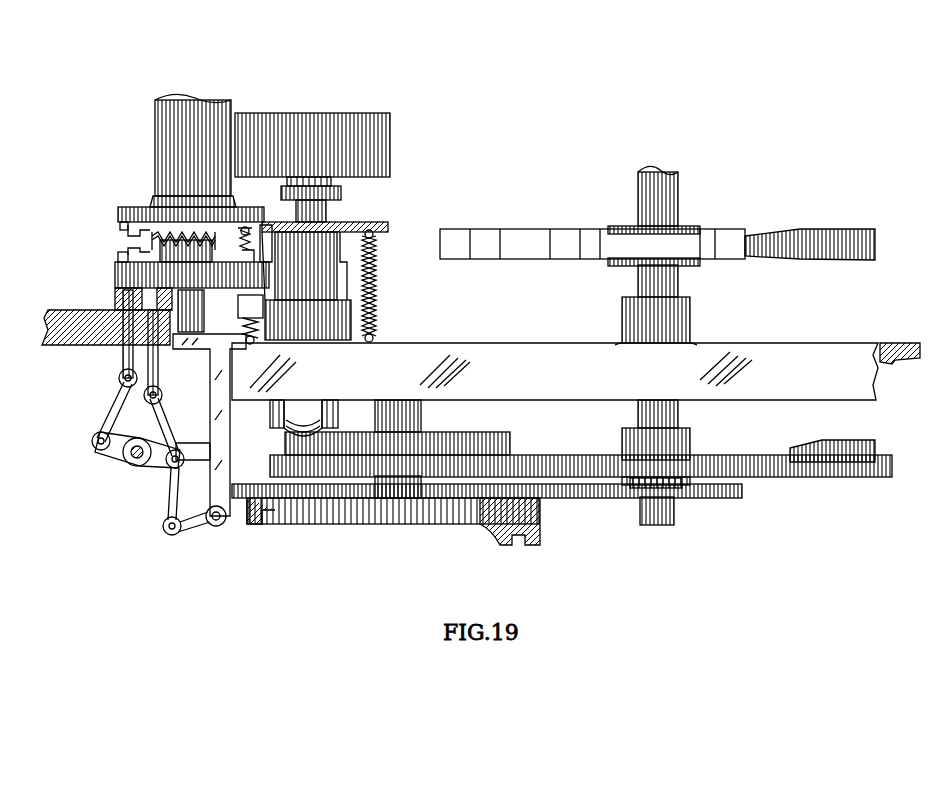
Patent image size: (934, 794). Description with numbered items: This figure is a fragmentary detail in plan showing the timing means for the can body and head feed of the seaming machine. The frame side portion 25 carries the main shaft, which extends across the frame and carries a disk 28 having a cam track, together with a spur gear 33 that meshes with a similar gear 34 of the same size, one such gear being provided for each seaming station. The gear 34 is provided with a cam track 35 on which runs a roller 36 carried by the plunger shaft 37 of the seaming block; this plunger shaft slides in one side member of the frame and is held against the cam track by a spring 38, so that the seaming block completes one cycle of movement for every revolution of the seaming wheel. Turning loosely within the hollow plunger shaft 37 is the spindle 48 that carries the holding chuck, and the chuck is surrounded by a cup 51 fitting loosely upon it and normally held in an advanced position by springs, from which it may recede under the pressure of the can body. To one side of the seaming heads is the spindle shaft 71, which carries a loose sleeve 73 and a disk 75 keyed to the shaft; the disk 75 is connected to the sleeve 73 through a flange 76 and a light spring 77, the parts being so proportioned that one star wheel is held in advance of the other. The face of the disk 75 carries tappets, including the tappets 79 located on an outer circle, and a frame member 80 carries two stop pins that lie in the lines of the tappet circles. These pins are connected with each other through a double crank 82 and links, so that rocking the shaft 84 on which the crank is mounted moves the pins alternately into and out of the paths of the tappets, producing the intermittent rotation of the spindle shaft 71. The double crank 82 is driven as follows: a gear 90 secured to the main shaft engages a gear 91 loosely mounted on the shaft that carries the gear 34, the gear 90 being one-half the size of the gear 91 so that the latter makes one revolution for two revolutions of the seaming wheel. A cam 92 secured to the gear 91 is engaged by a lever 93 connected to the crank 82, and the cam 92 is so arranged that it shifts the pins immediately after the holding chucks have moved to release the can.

The side portions of the frame 25 is at (576, 371).
The disk 28 is at (575, 258).
The spur gear 33 is at (762, 478).
The gear 34 is at (272, 466).
The cam track 35 is at (470, 438).
The roller 36 is at (286, 428).
The plunger shaft 37 is at (338, 278).
The spring 38 is at (378, 285).
The spindle 48 is at (328, 215).
The cup 51 is at (390, 140).
The spindle shaft 71 is at (205, 322).
The sleeve 73 is at (158, 160).
The disk 75 is at (118, 272).
The flange 76 is at (130, 210).
The light spring 77 is at (148, 241).
The tappet 79 is at (240, 300).
The frame member 80 is at (60, 346).
The double crank 82 is at (106, 454).
The shaft 84 is at (128, 462).
The gear 90 is at (718, 500).
The gear 91 is at (432, 500).
The cam 92 is at (496, 515).
The lever 93 is at (182, 536).